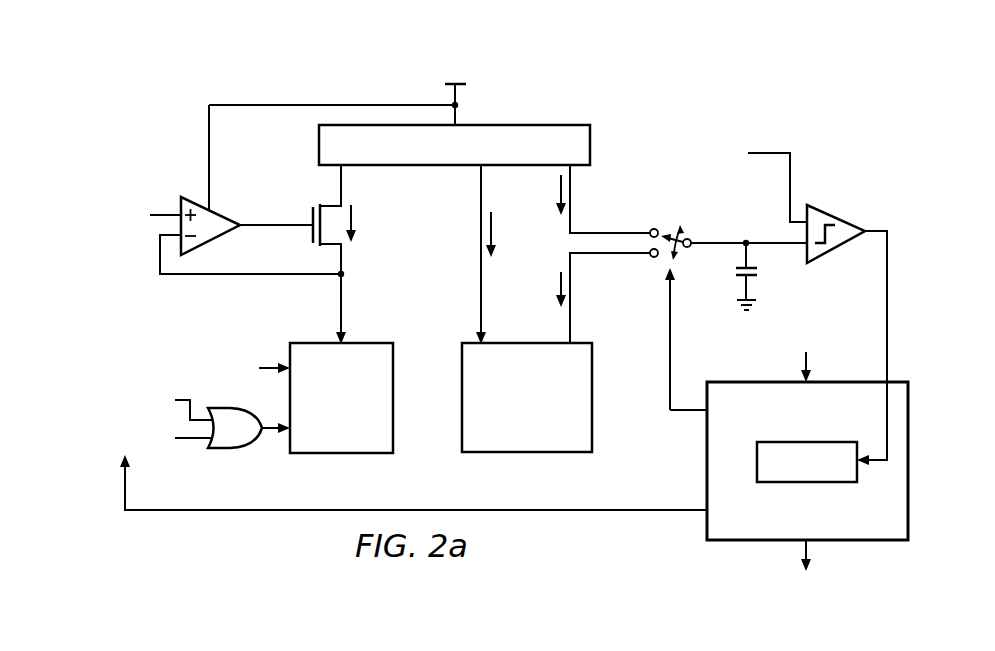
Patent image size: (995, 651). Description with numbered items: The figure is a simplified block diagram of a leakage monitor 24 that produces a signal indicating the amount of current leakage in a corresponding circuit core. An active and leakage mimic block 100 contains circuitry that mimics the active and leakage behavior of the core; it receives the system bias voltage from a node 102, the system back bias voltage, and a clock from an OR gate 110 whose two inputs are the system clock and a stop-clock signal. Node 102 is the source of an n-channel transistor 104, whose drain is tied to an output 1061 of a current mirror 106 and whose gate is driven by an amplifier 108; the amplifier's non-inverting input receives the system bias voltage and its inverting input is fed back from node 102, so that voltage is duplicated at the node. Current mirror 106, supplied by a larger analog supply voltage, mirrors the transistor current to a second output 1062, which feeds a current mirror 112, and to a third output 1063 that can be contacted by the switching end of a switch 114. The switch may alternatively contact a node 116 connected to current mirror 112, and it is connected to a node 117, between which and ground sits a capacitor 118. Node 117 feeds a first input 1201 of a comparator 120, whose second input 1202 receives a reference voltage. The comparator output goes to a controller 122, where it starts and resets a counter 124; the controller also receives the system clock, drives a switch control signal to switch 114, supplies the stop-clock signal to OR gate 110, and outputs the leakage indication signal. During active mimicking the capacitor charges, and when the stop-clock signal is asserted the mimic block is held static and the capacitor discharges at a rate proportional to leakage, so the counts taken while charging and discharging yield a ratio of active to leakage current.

The leakage monitor 24 is at (254, 78).
The amplifier 108 is at (245, 199).
The n-channel transistor 104 is at (311, 236).
The node 102 is at (345, 264).
The current mirror 106 is at (535, 123).
The output of current mirror 1061 is at (343, 170).
The output of current mirror 1062 is at (481, 233).
The output of current mirror 1063 is at (574, 178).
The node 116 is at (574, 285).
The switch 114 is at (672, 225).
The node 117 is at (715, 248).
The capacitor 118 is at (760, 275).
The comparator 120 is at (845, 198).
The input of comparator 1201 is at (758, 243).
The input of comparator 1202 is at (770, 152).
The controller 122 is at (860, 550).
The counter 124 is at (820, 484).
The current mirror 112 is at (527, 453).
The active and leakage mimic block 100 is at (326, 454).
The OR gate 110 is at (240, 448).